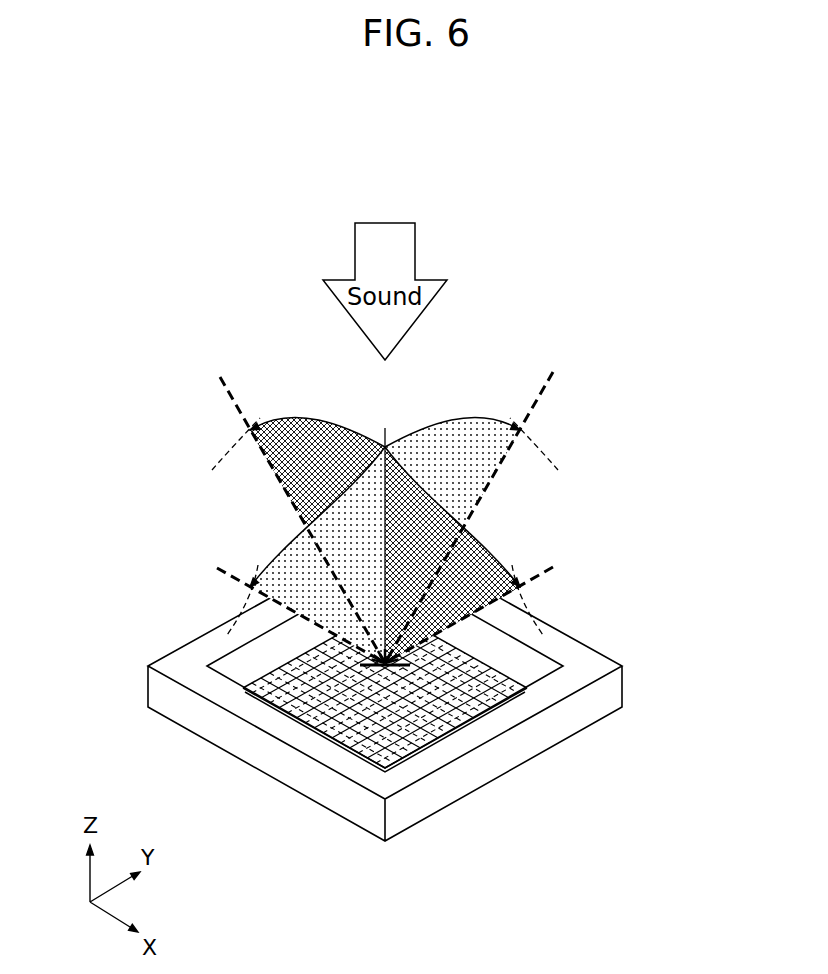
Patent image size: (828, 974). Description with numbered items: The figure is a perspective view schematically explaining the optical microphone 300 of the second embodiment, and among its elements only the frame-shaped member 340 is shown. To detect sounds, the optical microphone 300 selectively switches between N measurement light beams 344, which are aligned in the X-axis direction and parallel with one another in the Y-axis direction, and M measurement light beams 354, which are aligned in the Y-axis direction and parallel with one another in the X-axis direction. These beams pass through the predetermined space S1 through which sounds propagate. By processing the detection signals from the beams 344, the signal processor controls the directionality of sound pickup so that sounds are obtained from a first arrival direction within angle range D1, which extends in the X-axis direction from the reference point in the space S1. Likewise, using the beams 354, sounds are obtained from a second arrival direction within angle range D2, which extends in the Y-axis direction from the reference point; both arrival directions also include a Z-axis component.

The optical microphone 300 is at (599, 431).
The frame-shaped member 340 is at (584, 652).
The measurement light beams 344 is at (433, 730).
The measurement light beams 354 is at (337, 730).
The predetermined space S1 is at (263, 688).
The angle range D1 is at (471, 517).
The angle range D2 is at (298, 520).